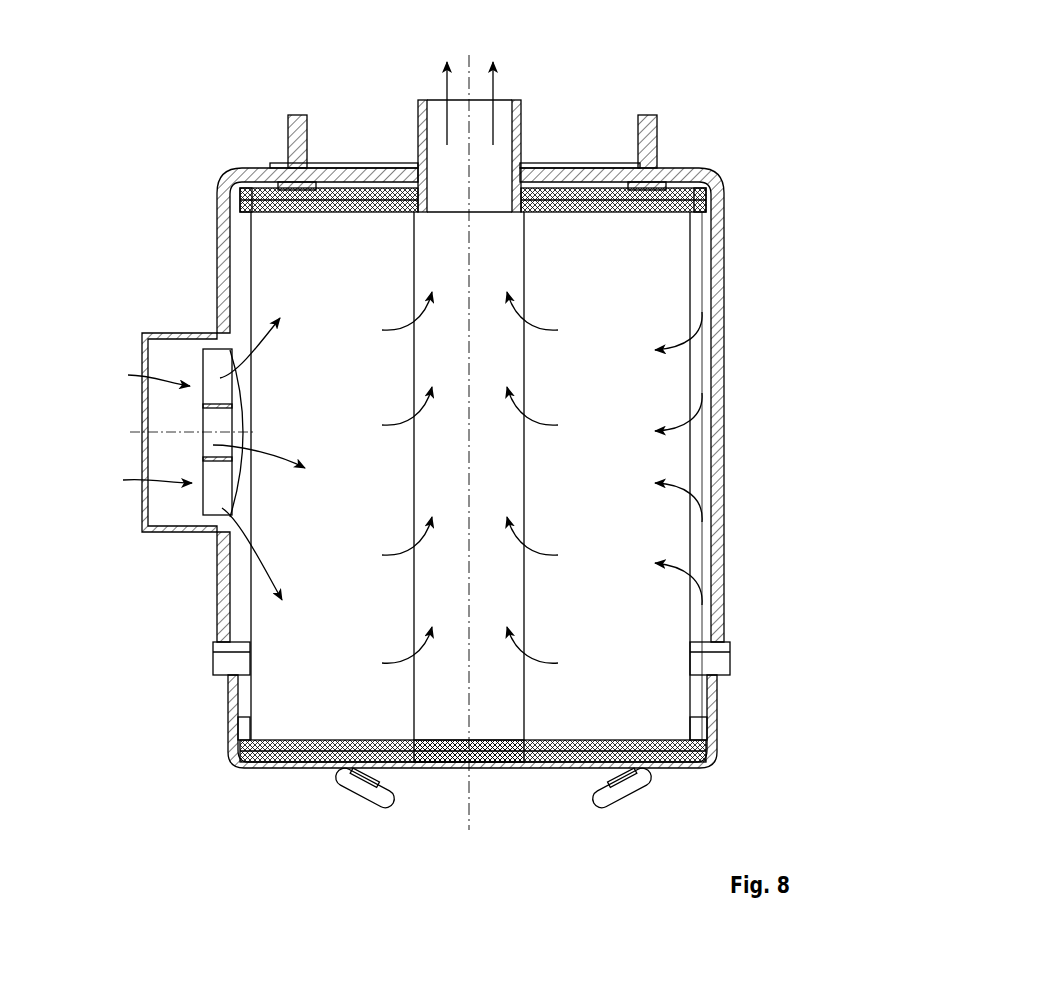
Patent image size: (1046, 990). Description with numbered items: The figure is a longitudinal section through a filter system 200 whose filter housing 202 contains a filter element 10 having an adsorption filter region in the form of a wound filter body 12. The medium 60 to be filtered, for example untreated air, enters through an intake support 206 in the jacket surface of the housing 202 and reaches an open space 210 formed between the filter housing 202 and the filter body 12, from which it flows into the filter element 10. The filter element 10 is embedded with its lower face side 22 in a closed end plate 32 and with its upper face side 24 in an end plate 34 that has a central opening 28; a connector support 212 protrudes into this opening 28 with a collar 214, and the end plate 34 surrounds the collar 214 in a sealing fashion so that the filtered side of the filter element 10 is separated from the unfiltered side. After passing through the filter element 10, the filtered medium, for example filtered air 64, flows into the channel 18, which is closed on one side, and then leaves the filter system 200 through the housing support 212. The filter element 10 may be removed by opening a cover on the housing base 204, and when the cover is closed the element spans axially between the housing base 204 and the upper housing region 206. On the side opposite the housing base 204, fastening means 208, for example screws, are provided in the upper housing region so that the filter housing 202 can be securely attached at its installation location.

The filter system 200 is at (745, 162).
The filter housing 202 is at (725, 352).
The housing base 204 is at (525, 770).
The intake support 206 is at (258, 165).
The fastening means 208 is at (297, 125).
The open space 210 is at (698, 455).
The connector support 212 is at (420, 122).
The collar 214 is at (240, 196).
The filter element 10 is at (690, 283).
The filter body 12 is at (652, 635).
The channel 18 is at (456, 477).
The lower face side 22 is at (293, 770).
The upper face side 24 is at (337, 190).
The central opening 28 is at (432, 213).
The closed end plate 32 is at (440, 763).
The end plate 34 is at (590, 195).
The medium to be filtered 60 is at (495, 90).
The filtered air 64 is at (470, 103).